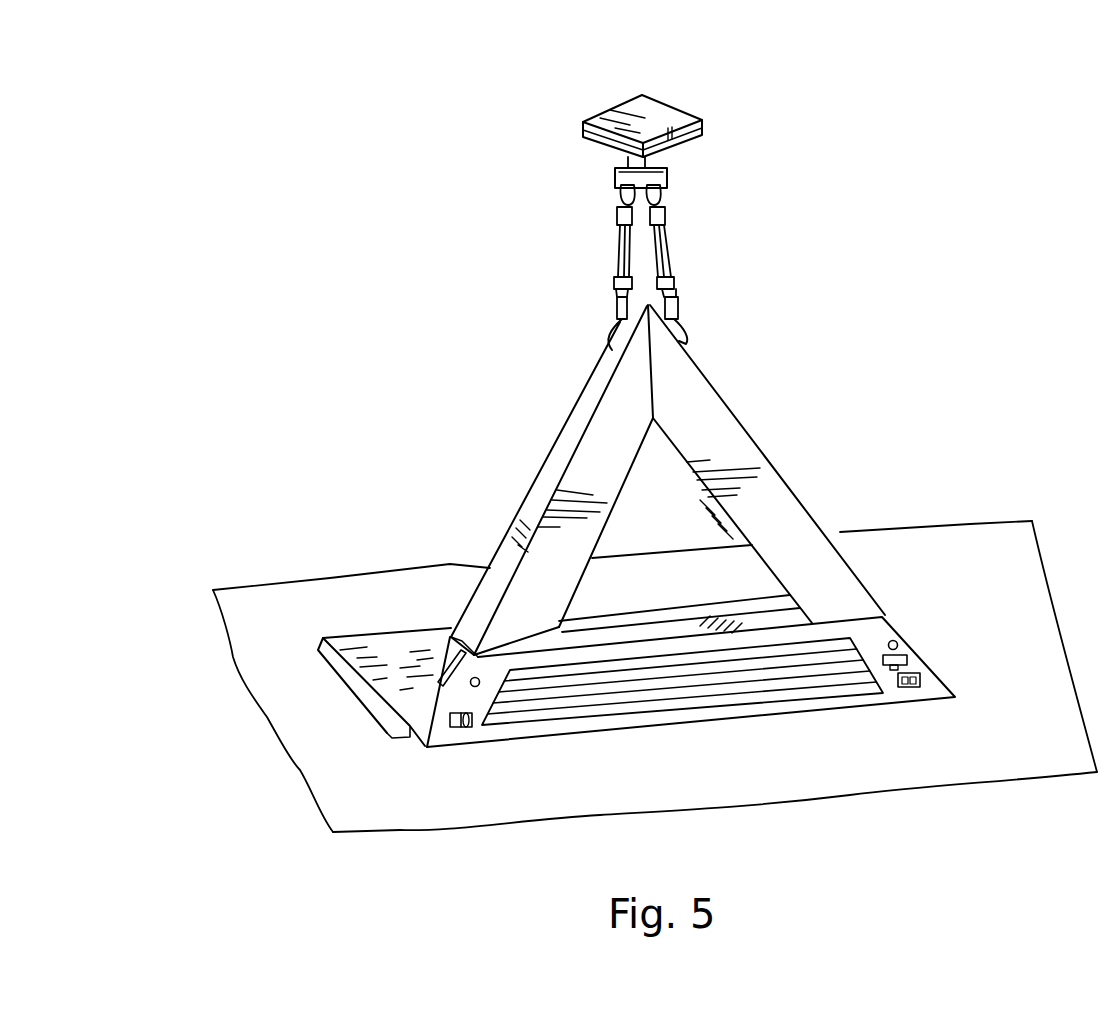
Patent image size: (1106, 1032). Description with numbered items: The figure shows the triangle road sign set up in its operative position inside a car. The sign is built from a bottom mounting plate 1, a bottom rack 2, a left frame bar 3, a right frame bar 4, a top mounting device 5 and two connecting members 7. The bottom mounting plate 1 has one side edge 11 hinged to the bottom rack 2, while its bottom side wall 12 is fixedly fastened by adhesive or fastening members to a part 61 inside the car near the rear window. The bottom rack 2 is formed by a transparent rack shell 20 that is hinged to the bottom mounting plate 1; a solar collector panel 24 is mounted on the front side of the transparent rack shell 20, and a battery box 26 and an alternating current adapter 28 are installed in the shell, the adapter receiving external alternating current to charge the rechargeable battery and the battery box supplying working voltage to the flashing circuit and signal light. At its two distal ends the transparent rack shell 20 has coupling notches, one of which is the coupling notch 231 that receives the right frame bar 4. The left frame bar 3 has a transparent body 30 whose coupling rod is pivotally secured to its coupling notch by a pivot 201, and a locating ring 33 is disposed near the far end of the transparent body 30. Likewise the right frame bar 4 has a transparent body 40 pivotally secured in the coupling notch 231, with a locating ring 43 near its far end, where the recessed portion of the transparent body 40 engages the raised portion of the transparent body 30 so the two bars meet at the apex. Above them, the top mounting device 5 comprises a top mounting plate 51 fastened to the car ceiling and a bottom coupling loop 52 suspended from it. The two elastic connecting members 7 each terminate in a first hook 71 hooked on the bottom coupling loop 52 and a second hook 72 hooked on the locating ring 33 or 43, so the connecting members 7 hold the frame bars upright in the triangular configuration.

The bottom mounting plate 1 is at (366, 614).
The bottom rack 2 is at (565, 745).
The left frame bar 3 is at (797, 464).
The right frame bar 4 is at (530, 480).
The top mounting device 5 is at (712, 150).
The connecting members 7 is at (656, 267).
The side edge 11 is at (403, 735).
The bottom side wall 12 is at (340, 680).
The transparent rack shell 20 is at (682, 723).
The solar collector panel 24 is at (692, 685).
The battery box 26 is at (883, 664).
The alternating current adapter 28 is at (907, 690).
The transparent body 30 is at (785, 485).
The locating ring 33 is at (688, 338).
The transparent body 40 is at (540, 492).
The locating ring 43 is at (614, 327).
The top mounting plate 51 is at (682, 118).
The bottom coupling loop 52 is at (668, 172).
The part inside a car 61 is at (283, 595).
The first hook 71 is at (616, 305).
The second hook 72 is at (618, 192).
The pivot 201 is at (896, 640).
The coupling notch 231 is at (447, 653).